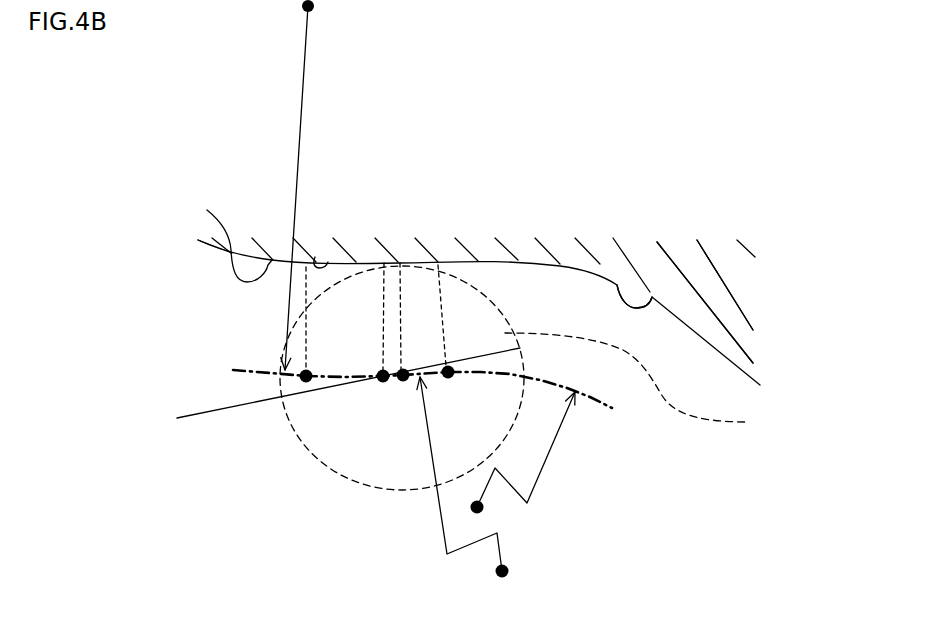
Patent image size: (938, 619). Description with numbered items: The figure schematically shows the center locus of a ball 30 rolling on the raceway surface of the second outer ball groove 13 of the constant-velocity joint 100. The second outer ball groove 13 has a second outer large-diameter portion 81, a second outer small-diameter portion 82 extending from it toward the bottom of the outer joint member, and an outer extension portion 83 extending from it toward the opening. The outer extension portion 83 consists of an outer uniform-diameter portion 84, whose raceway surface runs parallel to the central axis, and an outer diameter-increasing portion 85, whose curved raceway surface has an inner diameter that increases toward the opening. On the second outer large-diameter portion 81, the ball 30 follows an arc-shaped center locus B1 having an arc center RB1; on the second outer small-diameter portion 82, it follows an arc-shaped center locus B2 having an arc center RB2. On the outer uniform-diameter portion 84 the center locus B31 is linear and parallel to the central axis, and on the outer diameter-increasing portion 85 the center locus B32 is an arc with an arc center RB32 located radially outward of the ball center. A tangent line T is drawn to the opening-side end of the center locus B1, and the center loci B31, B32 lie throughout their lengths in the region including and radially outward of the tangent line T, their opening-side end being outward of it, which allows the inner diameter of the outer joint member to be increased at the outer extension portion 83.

The second outer large-diameter portion 81 is at (477, 257).
The second outer small-diameter portion 82 is at (652, 297).
The outer extension portion 83 is at (207, 270).
The outer uniform-diameter portion 84 is at (315, 257).
The outer diameter-increasing portion 85 is at (225, 234).
The constant-velocity joint 100 is at (755, 225).
The second outer ball groove 13 is at (213, 352).
The ball 30 is at (531, 378).
The tangent line T is at (207, 413).
The center locus B1 is at (413, 368).
The center locus B2 is at (550, 450).
The center locus B31 is at (323, 365).
The center locus B32 is at (300, 268).
The arc center RB1 is at (495, 571).
The arc center RB2 is at (483, 510).
The arc center RB32 is at (308, 6).